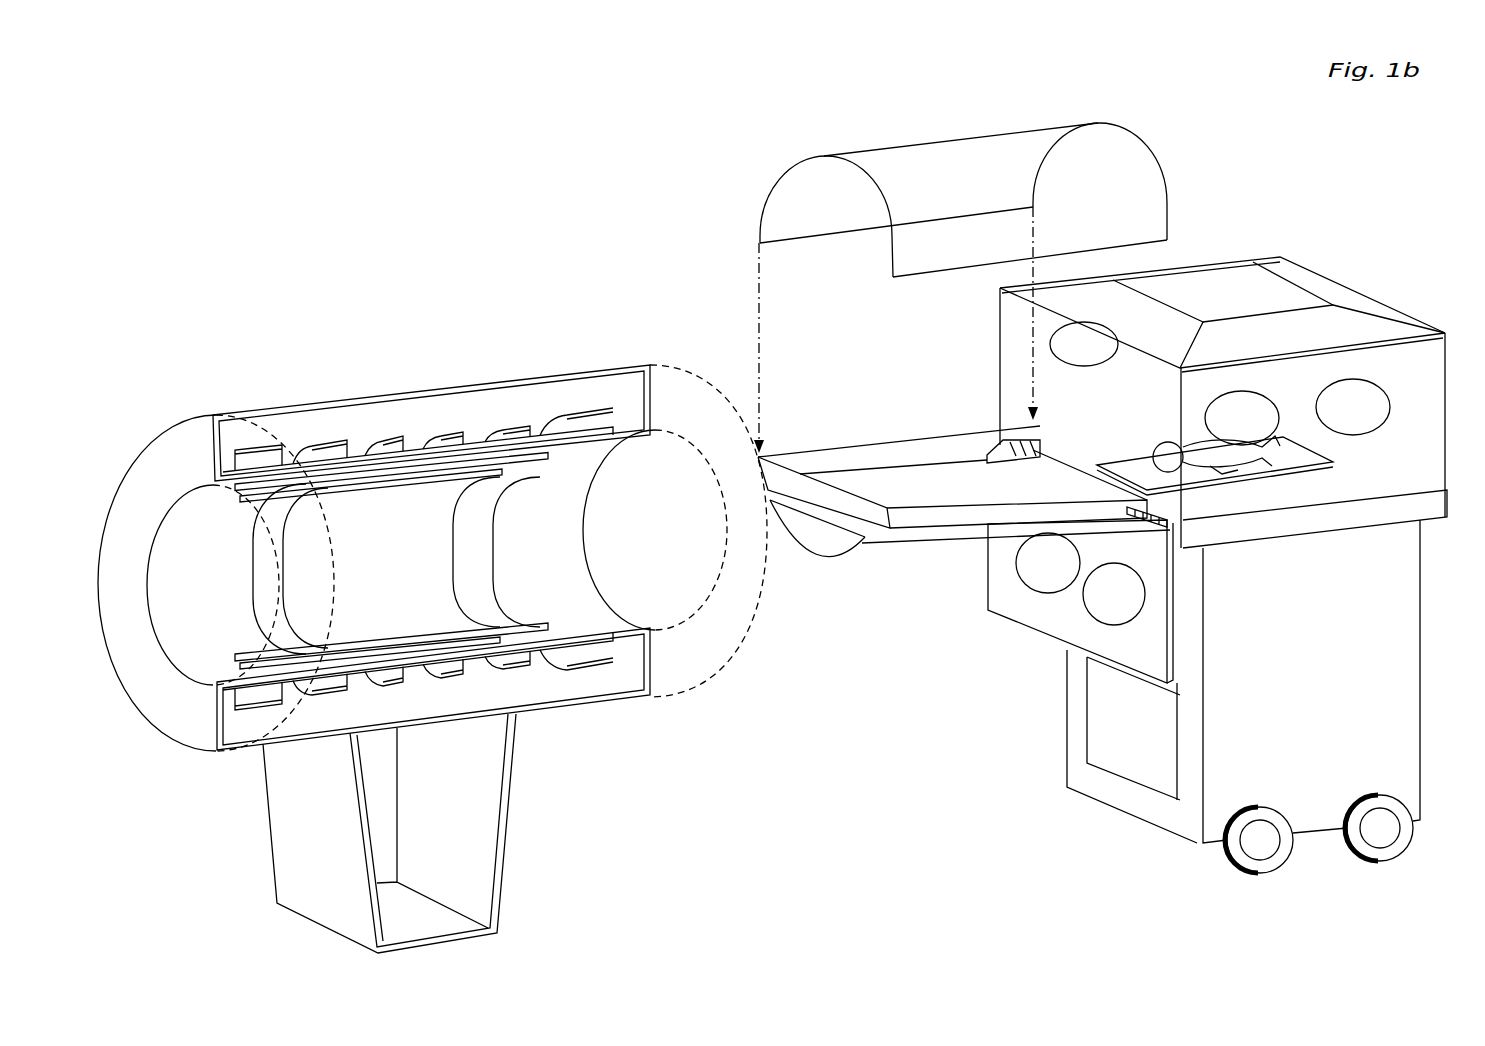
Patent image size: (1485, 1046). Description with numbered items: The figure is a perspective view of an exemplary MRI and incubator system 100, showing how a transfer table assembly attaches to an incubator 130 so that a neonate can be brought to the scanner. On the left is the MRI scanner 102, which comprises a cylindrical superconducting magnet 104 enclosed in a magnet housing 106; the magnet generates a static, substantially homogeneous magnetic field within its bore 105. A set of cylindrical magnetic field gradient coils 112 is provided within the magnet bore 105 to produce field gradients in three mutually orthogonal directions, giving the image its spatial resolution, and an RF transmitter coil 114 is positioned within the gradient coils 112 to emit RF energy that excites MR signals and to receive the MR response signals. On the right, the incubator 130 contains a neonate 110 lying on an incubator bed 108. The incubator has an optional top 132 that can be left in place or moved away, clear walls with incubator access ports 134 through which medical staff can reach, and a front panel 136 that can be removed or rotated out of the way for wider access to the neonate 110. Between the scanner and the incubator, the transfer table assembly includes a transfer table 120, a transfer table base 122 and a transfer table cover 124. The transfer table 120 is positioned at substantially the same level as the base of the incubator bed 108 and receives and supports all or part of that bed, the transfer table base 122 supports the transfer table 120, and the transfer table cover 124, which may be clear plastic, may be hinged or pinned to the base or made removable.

The MRI and incubator system 100 is at (665, 938).
The MRI scanner 102 is at (687, 378).
The cylindrical superconducting magnet 104 is at (440, 430).
The bore 105 is at (193, 645).
The magnet housing 106 is at (517, 373).
The incubator bed 108 is at (1287, 458).
The neonate 110 is at (1193, 467).
The cylindrical magnetic field gradient coils 112 is at (527, 625).
The RF transmitter coil 114 is at (458, 530).
The transfer table 120 is at (887, 548).
The transfer table base 122 is at (940, 543).
The transfer table cover 124 is at (1040, 130).
The incubator 130 is at (1373, 677).
The top 132 is at (1335, 303).
The incubator access ports 134 is at (1043, 347).
The front panel 136 is at (1037, 620).